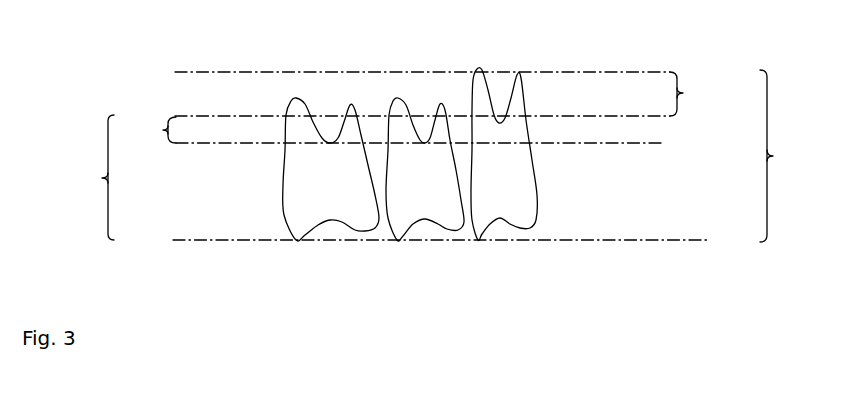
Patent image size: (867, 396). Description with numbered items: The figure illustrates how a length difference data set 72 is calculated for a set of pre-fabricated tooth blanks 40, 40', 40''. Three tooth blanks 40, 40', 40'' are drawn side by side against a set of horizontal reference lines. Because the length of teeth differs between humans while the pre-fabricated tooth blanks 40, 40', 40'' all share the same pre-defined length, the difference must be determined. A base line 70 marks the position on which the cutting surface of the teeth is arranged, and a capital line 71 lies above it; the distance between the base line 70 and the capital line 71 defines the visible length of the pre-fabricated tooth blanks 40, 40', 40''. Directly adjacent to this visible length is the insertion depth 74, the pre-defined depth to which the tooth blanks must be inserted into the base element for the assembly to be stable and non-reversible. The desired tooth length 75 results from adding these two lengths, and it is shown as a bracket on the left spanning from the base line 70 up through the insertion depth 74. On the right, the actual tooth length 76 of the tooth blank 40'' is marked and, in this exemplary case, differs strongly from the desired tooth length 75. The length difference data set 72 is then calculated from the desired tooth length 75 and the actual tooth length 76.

The pre-fabricated tooth blank 40 is at (331, 129).
The pre-fabricated tooth blank 40' is at (425, 129).
The pre-fabricated tooth blank 40'' is at (502, 129).
The base line 70 is at (453, 240).
The capital line 71 is at (665, 143).
The length difference data set 72 is at (683, 93).
The insertion depth 74 is at (163, 130).
The desired tooth length 75 is at (102, 178).
The actual tooth length 76 is at (773, 156).